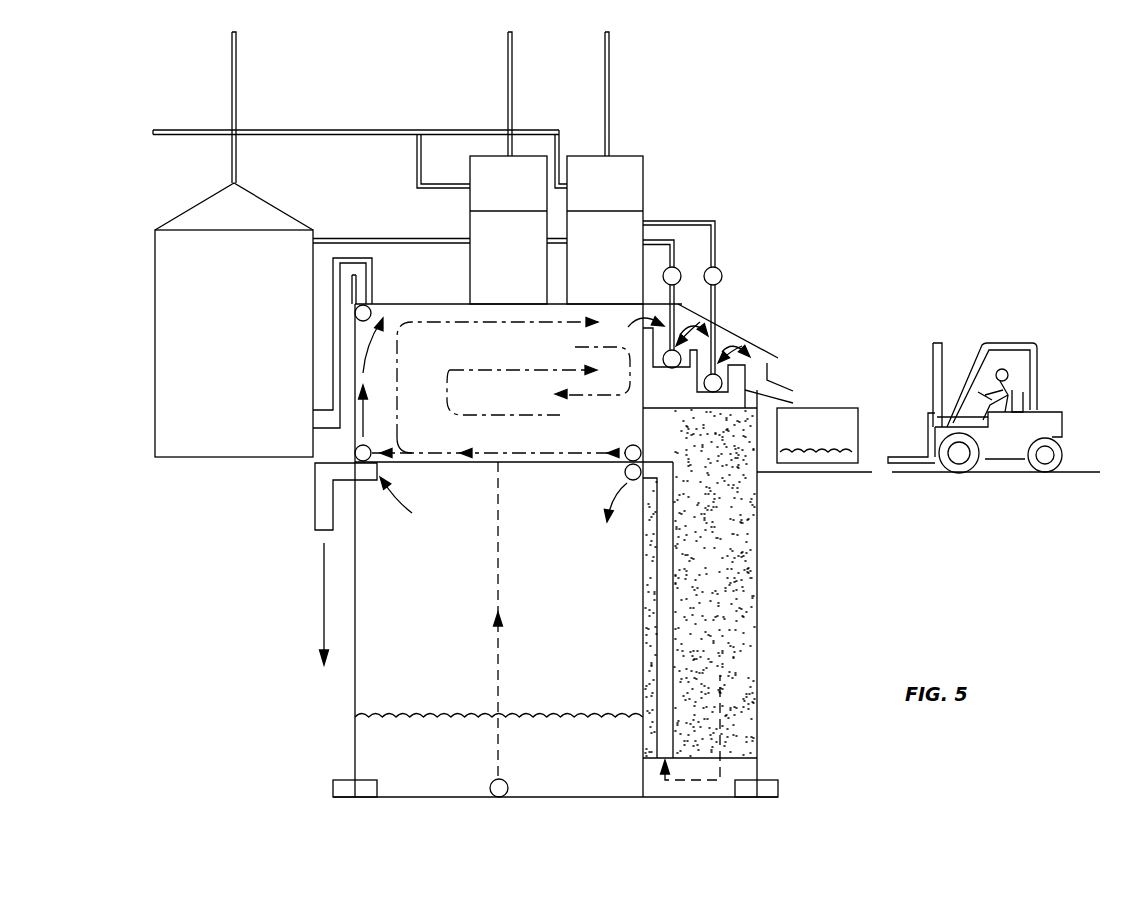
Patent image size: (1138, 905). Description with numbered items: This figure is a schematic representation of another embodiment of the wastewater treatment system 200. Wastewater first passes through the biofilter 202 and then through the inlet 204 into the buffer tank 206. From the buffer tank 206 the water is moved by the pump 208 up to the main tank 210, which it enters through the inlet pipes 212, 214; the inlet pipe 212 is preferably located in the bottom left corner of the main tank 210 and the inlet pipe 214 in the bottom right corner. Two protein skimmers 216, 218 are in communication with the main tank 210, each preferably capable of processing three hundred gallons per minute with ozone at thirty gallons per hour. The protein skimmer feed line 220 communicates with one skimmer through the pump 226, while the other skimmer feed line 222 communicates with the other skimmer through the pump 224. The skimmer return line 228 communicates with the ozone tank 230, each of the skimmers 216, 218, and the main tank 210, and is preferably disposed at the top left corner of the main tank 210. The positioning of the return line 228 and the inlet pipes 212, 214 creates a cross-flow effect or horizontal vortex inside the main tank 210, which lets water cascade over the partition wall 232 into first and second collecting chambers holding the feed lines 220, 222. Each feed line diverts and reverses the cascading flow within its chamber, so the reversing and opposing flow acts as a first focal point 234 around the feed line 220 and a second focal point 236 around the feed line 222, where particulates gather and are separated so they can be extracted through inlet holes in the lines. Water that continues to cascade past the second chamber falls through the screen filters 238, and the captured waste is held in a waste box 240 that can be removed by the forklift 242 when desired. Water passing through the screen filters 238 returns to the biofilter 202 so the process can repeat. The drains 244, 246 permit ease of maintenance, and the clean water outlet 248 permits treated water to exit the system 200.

The wastewater treatment system 200 is at (930, 106).
The biofilter 202 is at (705, 556).
The inlet 204 is at (665, 647).
The buffer tank 206 is at (357, 610).
The pump 208 is at (500, 798).
The main tank 210 is at (352, 441).
The inlet pipe 212 is at (366, 462).
The inlet pipe 214 is at (648, 463).
The protein skimmer 216 is at (660, 167).
The protein skimmer 218 is at (452, 220).
The protein skimmer feed line 220 is at (674, 249).
The skimmer feed line 222 is at (716, 260).
The pump 224 is at (675, 280).
The pump 226 is at (719, 279).
The skimmer return line 228 is at (368, 278).
The ozone tank 230 is at (248, 348).
The partition wall 232 is at (643, 328).
The first focal point 234 is at (697, 333).
The second focal point 236 is at (740, 352).
The screen filter 238 is at (745, 400).
The collection bin 240 is at (833, 435).
The forklift 242 is at (1014, 345).
The drain 244 is at (778, 790).
The drain 246 is at (333, 790).
The clean water outlet 248 is at (323, 520).